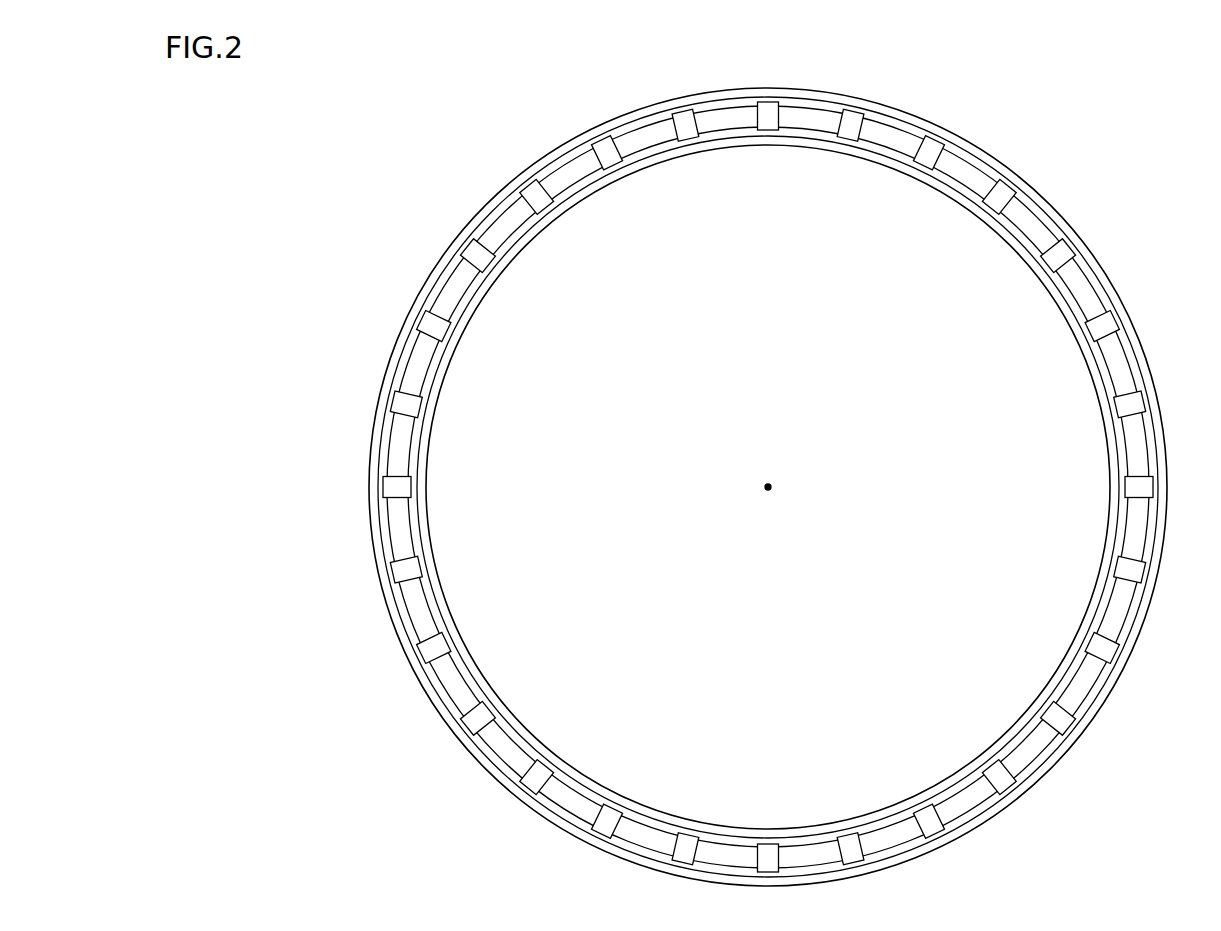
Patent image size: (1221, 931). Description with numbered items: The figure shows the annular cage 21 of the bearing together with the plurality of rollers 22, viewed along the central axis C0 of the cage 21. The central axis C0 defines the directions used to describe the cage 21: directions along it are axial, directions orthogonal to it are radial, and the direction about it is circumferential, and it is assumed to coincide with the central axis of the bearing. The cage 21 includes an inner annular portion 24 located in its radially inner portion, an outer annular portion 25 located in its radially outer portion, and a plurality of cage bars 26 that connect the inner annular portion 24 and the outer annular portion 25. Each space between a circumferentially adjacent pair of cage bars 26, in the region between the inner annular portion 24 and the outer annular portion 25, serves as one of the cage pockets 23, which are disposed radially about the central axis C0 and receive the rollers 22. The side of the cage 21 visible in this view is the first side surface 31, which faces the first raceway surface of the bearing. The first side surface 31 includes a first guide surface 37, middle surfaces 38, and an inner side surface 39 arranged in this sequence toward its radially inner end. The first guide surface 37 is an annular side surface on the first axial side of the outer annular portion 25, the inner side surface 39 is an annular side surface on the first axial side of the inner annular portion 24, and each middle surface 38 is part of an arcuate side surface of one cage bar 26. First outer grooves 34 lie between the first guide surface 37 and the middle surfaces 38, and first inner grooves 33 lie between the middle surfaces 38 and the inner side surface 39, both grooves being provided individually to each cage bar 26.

The cage 21 is at (1057, 209).
The rollers 22 is at (535, 190).
The cage pockets 23 is at (521, 183).
The inner annular portion 24 is at (432, 433).
The outer annular portion 25 is at (373, 420).
The cage bars 26 is at (573, 174).
The first side surface 31 is at (441, 704).
The first inner grooves 33 is at (570, 785).
The first outer grooves 34 is at (552, 813).
The first guide surface 37 is at (1005, 805).
The middle surfaces 38 is at (957, 800).
The inner side surface 39 is at (888, 812).
The central axis C0 is at (770, 485).